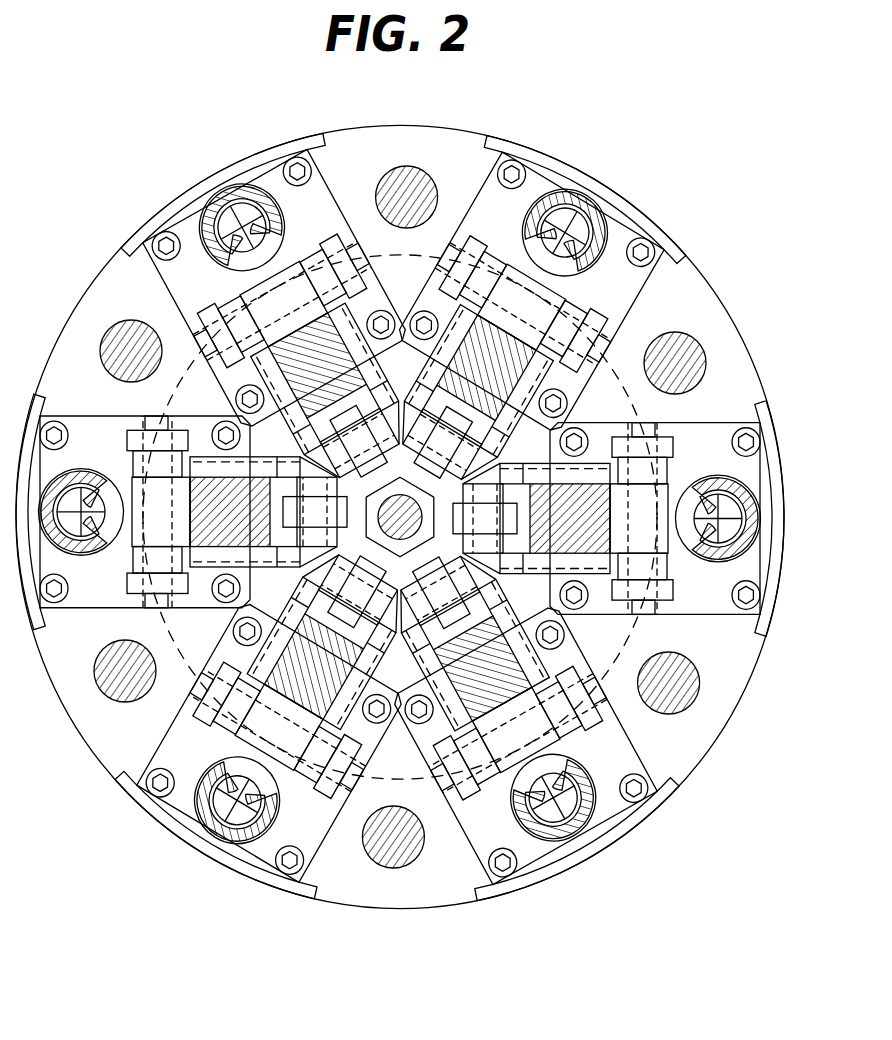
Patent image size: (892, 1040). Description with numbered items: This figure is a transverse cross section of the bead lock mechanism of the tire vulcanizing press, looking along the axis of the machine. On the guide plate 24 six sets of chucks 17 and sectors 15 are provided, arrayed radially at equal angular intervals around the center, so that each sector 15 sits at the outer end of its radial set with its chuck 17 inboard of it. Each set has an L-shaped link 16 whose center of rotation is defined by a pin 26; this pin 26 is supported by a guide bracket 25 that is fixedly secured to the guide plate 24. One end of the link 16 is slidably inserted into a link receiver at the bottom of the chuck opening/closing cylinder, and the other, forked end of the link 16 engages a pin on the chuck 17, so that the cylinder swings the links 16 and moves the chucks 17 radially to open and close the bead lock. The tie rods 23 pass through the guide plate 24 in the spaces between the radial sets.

The sectors 15 is at (560, 242).
The link 16 is at (527, 353).
The chucks 17 is at (285, 142).
The tie rods 23 is at (415, 177).
The guide plate 24 is at (687, 303).
The guide bracket 25 is at (693, 424).
The pin 26 is at (650, 615).